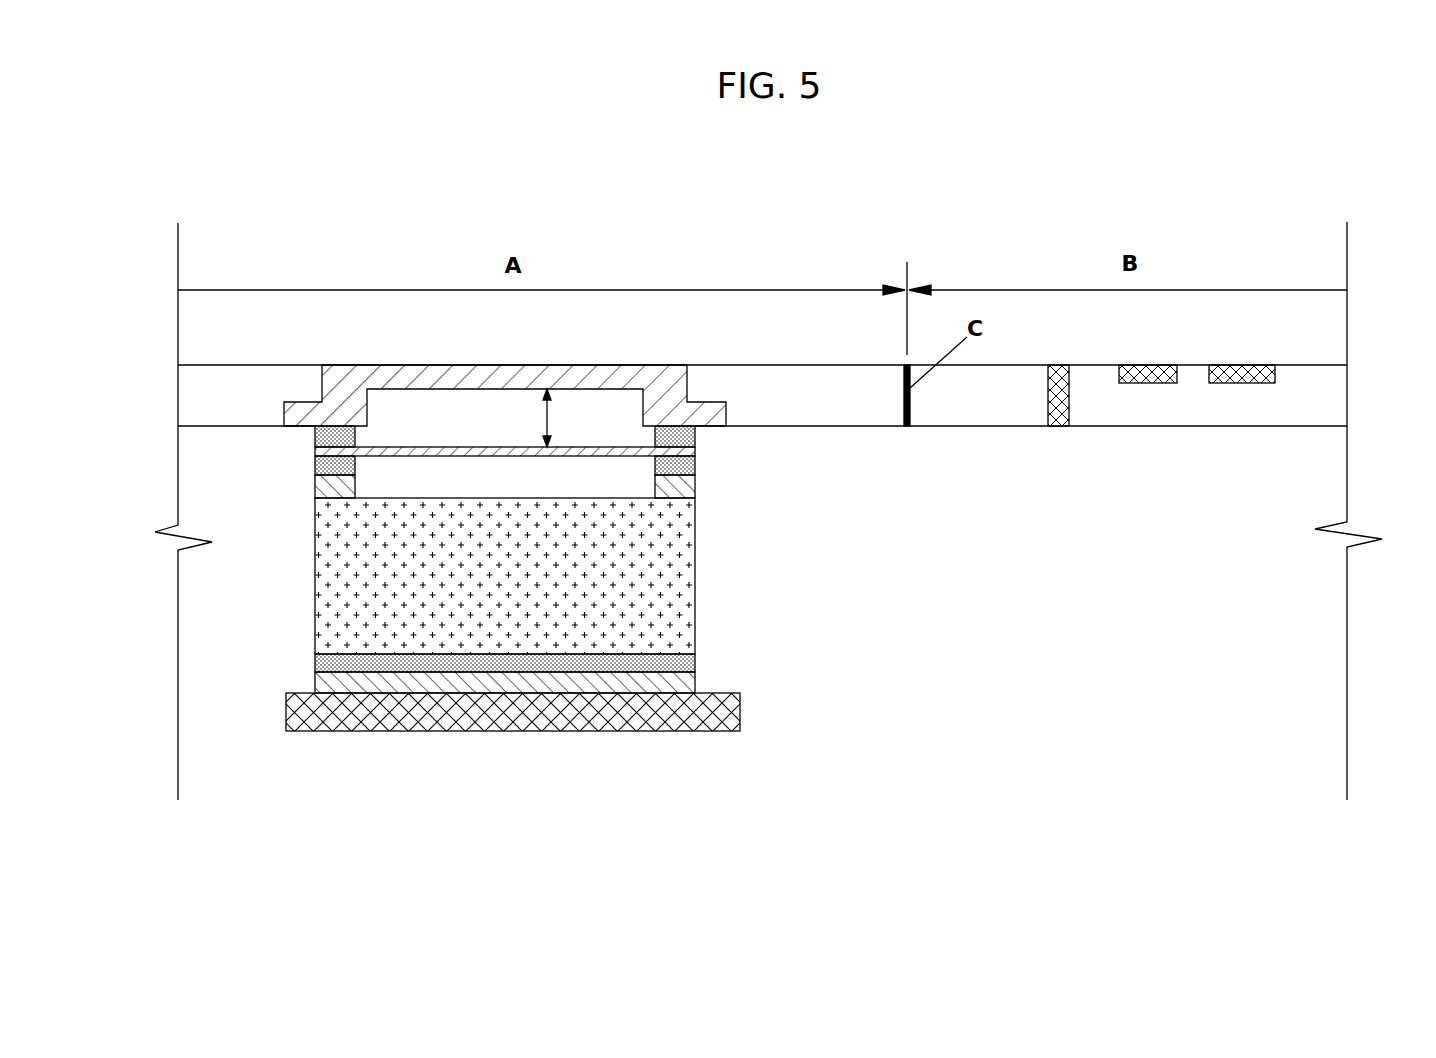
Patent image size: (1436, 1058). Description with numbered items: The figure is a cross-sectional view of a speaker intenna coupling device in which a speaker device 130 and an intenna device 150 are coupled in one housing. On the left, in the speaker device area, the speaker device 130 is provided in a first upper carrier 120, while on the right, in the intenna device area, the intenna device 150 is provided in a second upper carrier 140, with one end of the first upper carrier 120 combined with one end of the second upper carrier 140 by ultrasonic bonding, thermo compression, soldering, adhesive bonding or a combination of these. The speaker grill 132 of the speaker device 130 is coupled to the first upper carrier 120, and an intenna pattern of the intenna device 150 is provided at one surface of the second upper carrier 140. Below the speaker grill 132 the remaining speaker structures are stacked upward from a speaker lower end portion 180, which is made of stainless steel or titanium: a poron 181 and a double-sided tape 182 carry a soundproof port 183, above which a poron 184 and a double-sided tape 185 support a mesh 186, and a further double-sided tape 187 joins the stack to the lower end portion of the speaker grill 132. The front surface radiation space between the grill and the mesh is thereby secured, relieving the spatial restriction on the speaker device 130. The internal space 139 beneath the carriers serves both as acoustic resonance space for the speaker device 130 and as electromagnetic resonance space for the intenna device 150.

The first upper carrier 120 is at (783, 385).
The speaker device 130 is at (163, 692).
The speaker grill 132 is at (609, 375).
The internal space 139 is at (961, 567).
The second upper carrier 140 is at (1310, 400).
The intenna device 150 is at (1153, 365).
The speaker lower end portion 180 is at (643, 717).
The poron 181 is at (695, 680).
The double-sided tape 182 is at (695, 660).
The soundproof port 183 is at (678, 582).
The poron 184 is at (695, 490).
The double-sided tape 185 is at (697, 465).
The mesh 186 is at (695, 452).
The double-sided tape 187 is at (695, 437).